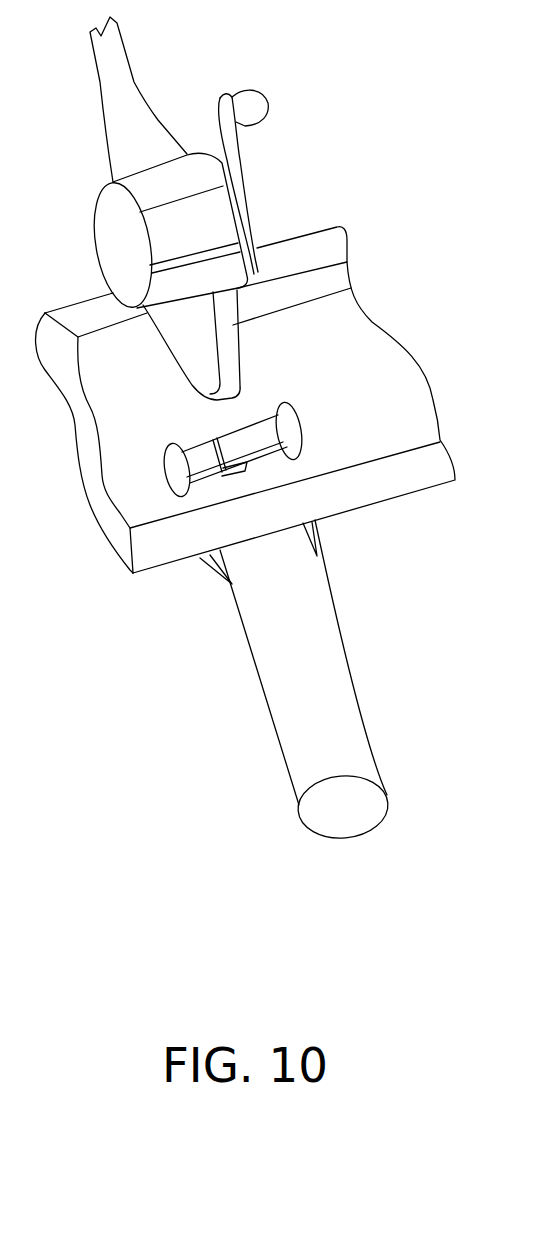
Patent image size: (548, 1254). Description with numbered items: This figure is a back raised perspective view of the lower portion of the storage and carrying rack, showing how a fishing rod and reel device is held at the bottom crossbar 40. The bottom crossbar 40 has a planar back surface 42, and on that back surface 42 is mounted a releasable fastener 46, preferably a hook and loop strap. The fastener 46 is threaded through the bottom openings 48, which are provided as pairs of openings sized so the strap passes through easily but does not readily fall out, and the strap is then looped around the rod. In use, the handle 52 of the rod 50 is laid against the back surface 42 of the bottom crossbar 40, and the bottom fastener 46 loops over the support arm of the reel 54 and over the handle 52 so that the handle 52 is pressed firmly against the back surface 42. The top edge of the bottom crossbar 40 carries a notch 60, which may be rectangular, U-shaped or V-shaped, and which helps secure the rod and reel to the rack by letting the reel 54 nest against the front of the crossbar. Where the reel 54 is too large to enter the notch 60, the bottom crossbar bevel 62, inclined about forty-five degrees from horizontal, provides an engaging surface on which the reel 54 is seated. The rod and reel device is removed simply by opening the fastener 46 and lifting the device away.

The bottom crossbar 40 is at (377, 343).
The back surface 42 is at (112, 387).
The releasable fastener 46 is at (273, 437).
The bottom openings 48 is at (177, 472).
The rod 50 is at (120, 57).
The handle 52 is at (337, 675).
The reel 54 is at (127, 250).
The notch 60 is at (352, 287).
The bottom crossbar bevel 62 is at (307, 248).